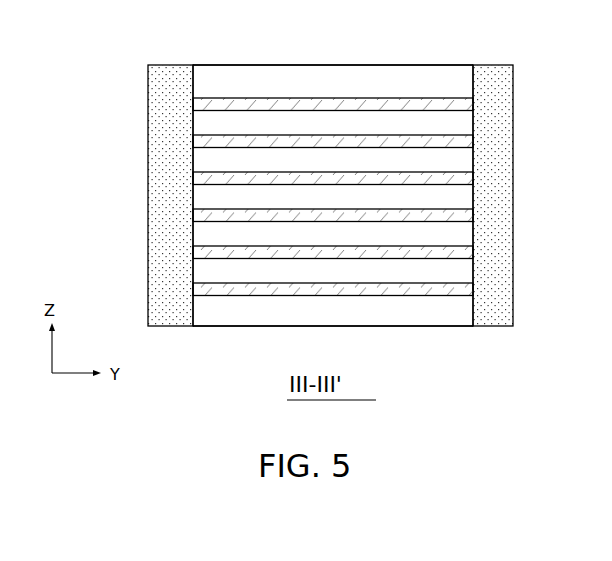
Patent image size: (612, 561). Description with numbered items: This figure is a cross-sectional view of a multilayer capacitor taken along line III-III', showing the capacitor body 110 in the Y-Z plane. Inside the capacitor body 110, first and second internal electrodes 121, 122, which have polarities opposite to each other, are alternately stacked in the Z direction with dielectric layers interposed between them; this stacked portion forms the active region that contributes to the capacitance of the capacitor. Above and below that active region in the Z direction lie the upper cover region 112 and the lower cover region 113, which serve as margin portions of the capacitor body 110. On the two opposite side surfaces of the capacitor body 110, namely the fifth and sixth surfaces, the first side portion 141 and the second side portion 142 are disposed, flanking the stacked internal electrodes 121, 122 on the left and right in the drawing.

The capacitor body 110 is at (237, 65).
The upper cover region 112 is at (443, 82).
The lower cover region 113 is at (441, 310).
The first internal electrode 121 is at (327, 105).
The second internal electrode 122 is at (390, 136).
The first side portion 141 is at (171, 86).
The second side portion 142 is at (490, 86).